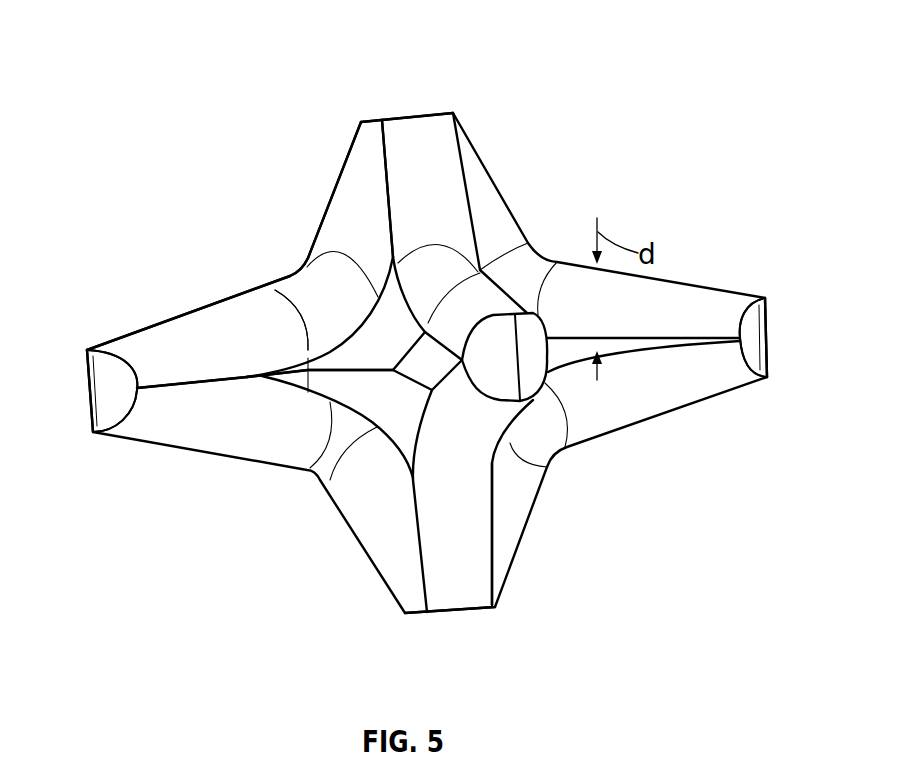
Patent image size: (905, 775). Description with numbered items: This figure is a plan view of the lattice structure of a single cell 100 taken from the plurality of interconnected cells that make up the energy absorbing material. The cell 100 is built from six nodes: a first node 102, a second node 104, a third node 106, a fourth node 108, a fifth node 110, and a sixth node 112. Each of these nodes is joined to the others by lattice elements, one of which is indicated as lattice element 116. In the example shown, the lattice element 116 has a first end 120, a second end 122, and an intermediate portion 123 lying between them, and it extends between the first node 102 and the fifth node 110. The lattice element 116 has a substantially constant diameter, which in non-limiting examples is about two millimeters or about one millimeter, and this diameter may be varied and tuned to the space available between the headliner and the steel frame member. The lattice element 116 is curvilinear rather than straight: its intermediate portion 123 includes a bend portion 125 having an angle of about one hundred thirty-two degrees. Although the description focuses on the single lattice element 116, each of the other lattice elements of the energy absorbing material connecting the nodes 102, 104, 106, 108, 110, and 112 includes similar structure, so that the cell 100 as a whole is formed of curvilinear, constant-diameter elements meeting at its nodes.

The cell 100 is at (143, 170).
The first node 102 is at (104, 393).
The second node 104 is at (242, 343).
The third node 106 is at (757, 337).
The fourth node 108 is at (548, 381).
The fifth node 110 is at (421, 110).
The sixth node 112 is at (457, 612).
The lattice element 116 is at (189, 325).
The first end 120 is at (137, 350).
The second end 122 is at (362, 158).
The intermediate portion 123 is at (293, 365).
The bend portion 125 is at (293, 266).